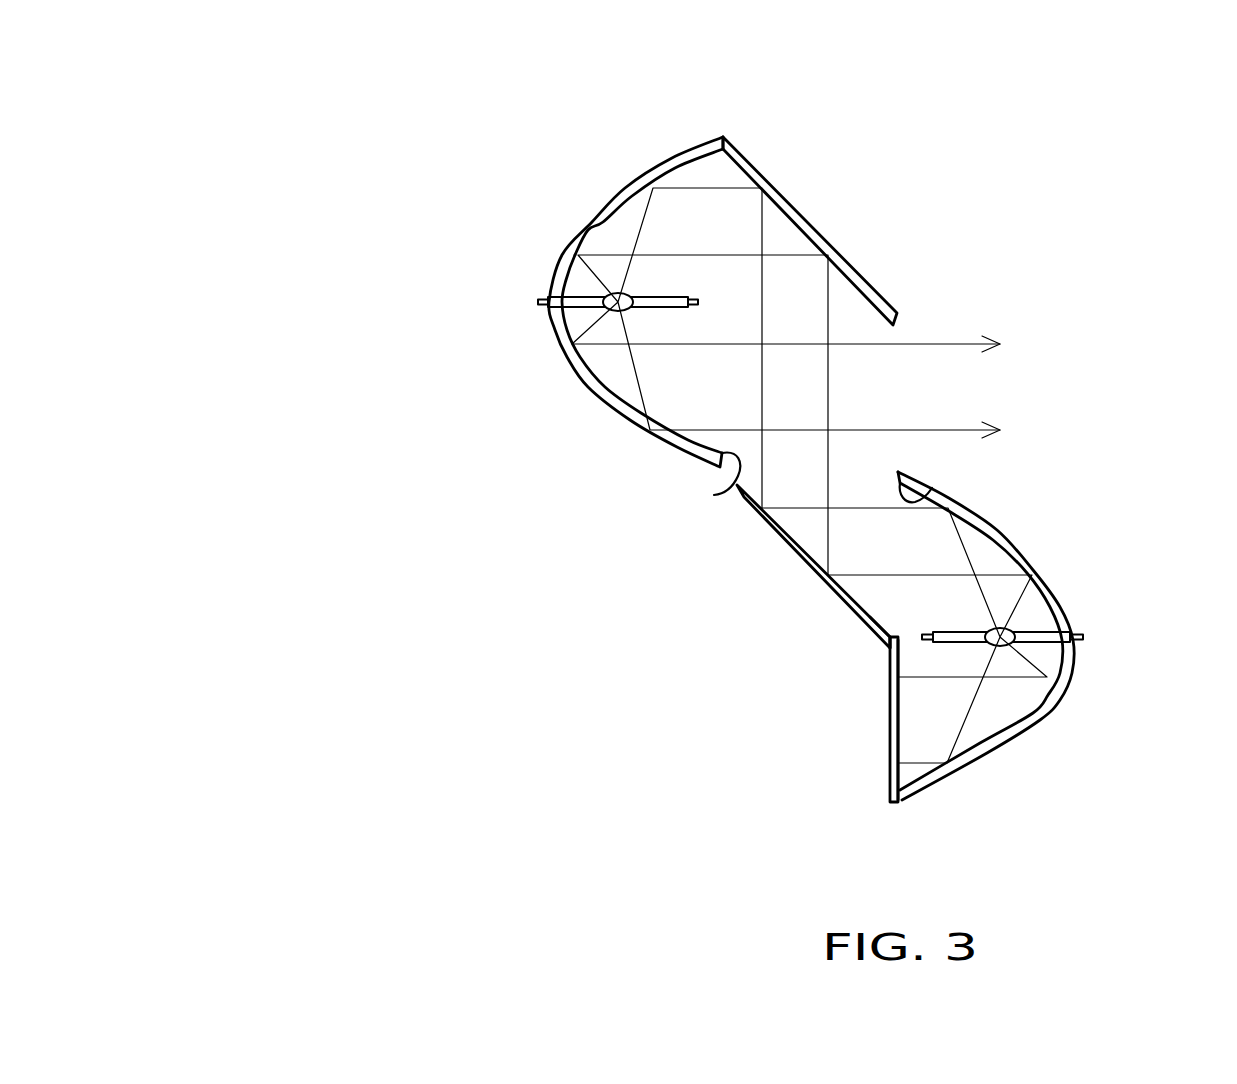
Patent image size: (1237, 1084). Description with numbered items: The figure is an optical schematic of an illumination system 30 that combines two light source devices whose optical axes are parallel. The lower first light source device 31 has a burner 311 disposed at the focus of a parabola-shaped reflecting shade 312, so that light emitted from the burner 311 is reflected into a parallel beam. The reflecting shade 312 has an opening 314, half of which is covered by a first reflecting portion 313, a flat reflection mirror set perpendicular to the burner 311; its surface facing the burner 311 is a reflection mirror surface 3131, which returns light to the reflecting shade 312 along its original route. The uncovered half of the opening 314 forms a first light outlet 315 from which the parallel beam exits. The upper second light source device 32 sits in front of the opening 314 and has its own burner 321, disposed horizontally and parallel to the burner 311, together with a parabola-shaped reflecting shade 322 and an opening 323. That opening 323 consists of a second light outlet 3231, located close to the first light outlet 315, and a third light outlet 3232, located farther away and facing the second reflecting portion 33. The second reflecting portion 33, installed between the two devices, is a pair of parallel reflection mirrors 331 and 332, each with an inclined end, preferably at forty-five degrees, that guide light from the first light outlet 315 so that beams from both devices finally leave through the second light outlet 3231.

The illumination system 30 is at (379, 575).
The first light source device 31 is at (1049, 772).
The burner 311 is at (1013, 628).
The parabola-shaped reflecting shade 312 is at (1065, 670).
The first reflecting portion 313 is at (895, 742).
The reflection mirror surface 3131 is at (905, 716).
The opening 314 is at (928, 495).
The first light outlet 315 is at (893, 598).
The second light source device 32 is at (508, 198).
The burner 321 is at (583, 300).
The parabola-shaped reflecting shade 322 is at (581, 376).
The opening 323 is at (715, 494).
The second light outlet 3231 is at (720, 388).
The third light outlet 3232 is at (730, 220).
The second reflecting portion 33 is at (730, 522).
The reflection mirror 331 is at (802, 563).
The reflection mirror 332 is at (813, 223).